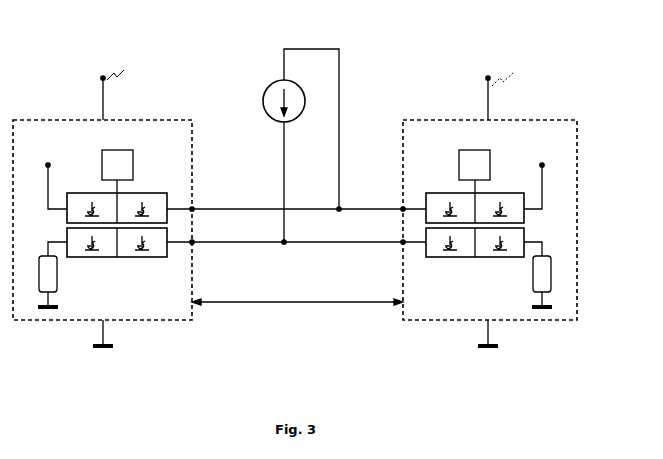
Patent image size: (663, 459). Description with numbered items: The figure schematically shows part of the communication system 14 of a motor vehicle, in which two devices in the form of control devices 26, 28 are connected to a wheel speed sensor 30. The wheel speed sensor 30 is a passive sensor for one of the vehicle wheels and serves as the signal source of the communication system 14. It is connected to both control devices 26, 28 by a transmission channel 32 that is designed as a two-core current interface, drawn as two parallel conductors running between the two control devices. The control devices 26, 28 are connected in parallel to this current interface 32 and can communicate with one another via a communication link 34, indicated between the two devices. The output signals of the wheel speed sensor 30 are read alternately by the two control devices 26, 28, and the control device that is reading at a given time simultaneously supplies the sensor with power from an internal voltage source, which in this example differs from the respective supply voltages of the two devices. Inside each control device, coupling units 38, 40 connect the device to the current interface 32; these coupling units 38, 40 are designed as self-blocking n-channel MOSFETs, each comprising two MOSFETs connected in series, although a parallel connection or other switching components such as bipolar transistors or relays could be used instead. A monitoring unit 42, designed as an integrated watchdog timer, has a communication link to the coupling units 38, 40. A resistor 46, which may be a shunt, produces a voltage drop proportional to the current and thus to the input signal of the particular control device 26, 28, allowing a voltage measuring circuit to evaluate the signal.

The communication system 14 is at (322, 190).
The control device 26 is at (103, 218).
The control device 28 is at (517, 201).
The wheel speed sensor 30 is at (289, 145).
The transmission channel 32 is at (296, 251).
The communication link 34 is at (297, 320).
The coupling unit 38 is at (130, 151).
The coupling unit 40 is at (122, 304).
The monitoring unit 42 is at (507, 135).
The resistor 46 is at (577, 274).